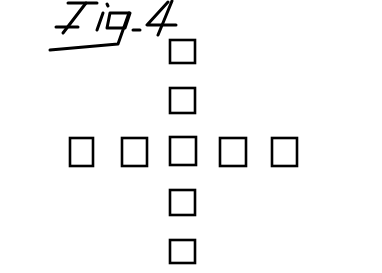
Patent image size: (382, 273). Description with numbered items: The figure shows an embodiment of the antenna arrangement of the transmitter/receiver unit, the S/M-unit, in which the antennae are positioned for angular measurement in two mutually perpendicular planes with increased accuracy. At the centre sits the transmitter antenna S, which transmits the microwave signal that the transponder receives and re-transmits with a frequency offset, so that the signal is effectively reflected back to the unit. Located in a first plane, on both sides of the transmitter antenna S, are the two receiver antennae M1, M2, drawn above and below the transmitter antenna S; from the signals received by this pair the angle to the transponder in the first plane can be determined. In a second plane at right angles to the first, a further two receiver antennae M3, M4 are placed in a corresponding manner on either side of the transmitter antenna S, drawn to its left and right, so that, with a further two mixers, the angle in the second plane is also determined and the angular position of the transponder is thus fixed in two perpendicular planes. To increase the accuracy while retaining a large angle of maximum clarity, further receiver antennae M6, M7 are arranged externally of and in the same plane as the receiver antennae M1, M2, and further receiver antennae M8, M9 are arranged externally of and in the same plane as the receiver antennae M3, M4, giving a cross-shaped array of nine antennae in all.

The receiver antenna M1 is at (195, 100).
The receiver antenna M2 is at (195, 202).
The receiver antenna M3 is at (131, 163).
The receiver antenna M4 is at (232, 162).
The further receiver antenna M6 is at (195, 52).
The further receiver antenna M7 is at (195, 252).
The further receiver antenna M8 is at (82, 163).
The further receiver antenna M9 is at (283, 162).
The transmitter antenna S is at (190, 157).